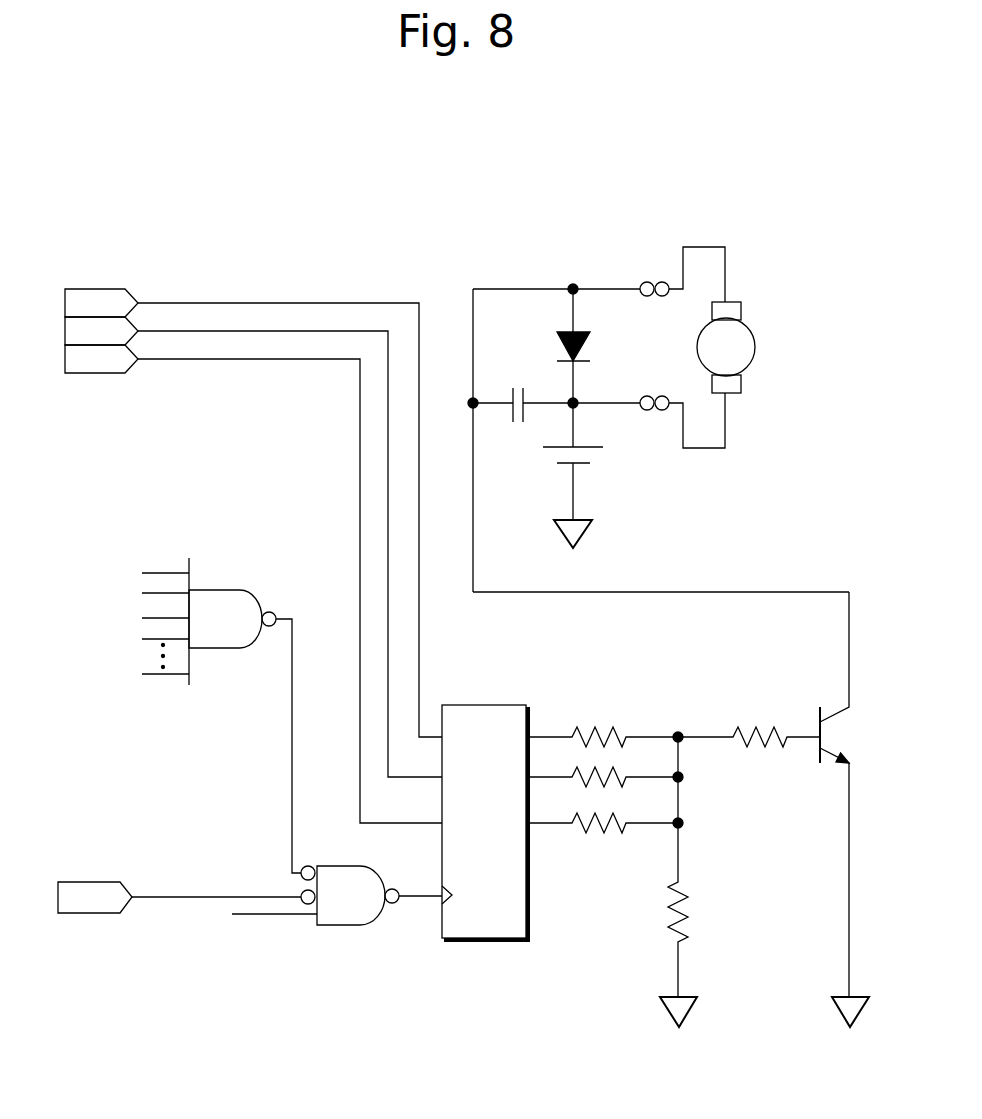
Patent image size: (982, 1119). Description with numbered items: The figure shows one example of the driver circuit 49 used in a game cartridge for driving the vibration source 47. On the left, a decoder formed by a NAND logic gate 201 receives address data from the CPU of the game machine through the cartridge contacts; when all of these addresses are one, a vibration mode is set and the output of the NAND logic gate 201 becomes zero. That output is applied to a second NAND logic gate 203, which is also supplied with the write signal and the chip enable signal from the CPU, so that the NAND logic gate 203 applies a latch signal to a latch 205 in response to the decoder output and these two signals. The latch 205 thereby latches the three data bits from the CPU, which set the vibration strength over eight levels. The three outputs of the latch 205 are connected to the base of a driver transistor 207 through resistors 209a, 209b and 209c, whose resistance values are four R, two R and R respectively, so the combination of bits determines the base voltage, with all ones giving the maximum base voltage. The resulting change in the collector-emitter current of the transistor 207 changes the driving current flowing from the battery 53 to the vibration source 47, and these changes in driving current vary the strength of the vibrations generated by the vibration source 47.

The driver circuit 49 is at (356, 184).
The vibration source 47 is at (740, 340).
The battery 53 is at (587, 441).
The NAND logic gate 201 is at (235, 618).
The NAND logic gate 203 is at (363, 910).
The latch 205 is at (478, 707).
The driver transistor 207 is at (818, 718).
The resistor 209a is at (607, 730).
The resistor 209b is at (625, 768).
The resistor 209c is at (612, 832).